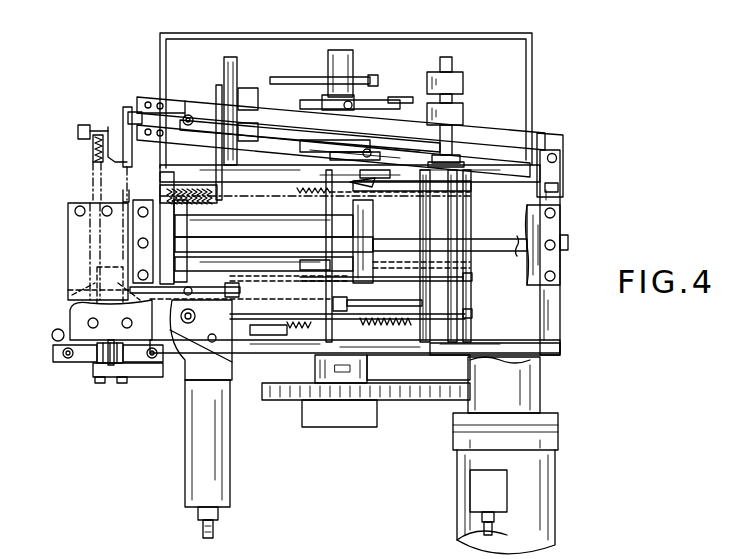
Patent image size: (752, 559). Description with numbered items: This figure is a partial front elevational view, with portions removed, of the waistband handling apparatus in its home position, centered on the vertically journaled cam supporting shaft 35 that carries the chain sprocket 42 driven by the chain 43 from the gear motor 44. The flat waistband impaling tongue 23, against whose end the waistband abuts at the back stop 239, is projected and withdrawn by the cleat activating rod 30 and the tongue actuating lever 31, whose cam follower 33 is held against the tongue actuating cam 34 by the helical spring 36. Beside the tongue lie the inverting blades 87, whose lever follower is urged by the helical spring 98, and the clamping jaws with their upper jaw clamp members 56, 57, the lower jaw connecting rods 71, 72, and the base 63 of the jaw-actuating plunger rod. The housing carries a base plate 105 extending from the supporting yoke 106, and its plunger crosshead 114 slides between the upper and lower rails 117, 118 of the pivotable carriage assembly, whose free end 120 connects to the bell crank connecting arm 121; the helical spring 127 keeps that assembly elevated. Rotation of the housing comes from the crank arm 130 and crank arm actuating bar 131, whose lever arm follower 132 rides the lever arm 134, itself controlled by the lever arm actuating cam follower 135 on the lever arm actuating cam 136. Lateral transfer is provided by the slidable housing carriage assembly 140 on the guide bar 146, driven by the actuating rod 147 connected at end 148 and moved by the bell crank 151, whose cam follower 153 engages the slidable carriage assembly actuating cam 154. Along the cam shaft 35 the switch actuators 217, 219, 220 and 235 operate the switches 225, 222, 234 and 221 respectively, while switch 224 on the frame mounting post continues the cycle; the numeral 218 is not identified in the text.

The cam supporting shaft 35 is at (343, 47).
The free end of carriage assembly 120 is at (133, 103).
The plunger crosshead 114 is at (165, 96).
The upper rails 117 is at (180, 103).
The lower rails 118 is at (207, 137).
The bell crank connecting arm 121 is at (123, 110).
The helical spring 127 is at (92, 149).
The actuating rod end 148 is at (125, 181).
The switch 221 is at (217, 147).
The switch 234 is at (245, 87).
The switch 222 is at (254, 88).
The switch actuator 217 is at (285, 77).
The bar 218 is at (304, 108).
The arcuate switch actuator 220 is at (393, 97).
The switch 225 is at (462, 78).
The switch 224 is at (462, 110).
The switch actuator 219 is at (350, 147).
The switch actuator 235 is at (383, 158).
The back stop 239 is at (72, 228).
The base 63 is at (110, 287).
The lower jaw connecting rod 72 is at (102, 313).
The lower jaw connecting rod 71 is at (52, 333).
The upper jaw clamp member 56 is at (62, 363).
The upper jaw clamp member 57 is at (162, 363).
The inverting blades 87 is at (98, 362).
The waistband impaling tongue 23 is at (112, 370).
The base plate 105 is at (148, 378).
The supporting yoke 106 is at (198, 356).
The cleat activating rod 30 is at (234, 354).
The slidable housing carriage assembly 140 is at (380, 230).
The actuating rod 147 is at (250, 190).
The guide bar 146 is at (503, 241).
The cam follower 153 is at (370, 184).
The slidable carriage assembly actuating cam 154 is at (464, 187).
The bell crank 151 is at (480, 205).
The lever arm follower 132 is at (250, 275).
The lever arm actuating cam 136 is at (313, 266).
The lever arm actuating cam follower 135 is at (373, 270).
The lever arm 134 is at (467, 278).
The crank arm actuating bar 131 is at (240, 291).
The crank arm 130 is at (236, 296).
The cam follower 33 is at (334, 302).
The tongue actuating cam 34 is at (356, 304).
The tongue actuating lever 31 is at (470, 316).
The helical spring 98 is at (300, 332).
The helical spring 36 is at (397, 330).
The chain sprocket 42 is at (412, 401).
The chain 43 is at (540, 388).
The gear motor 44 is at (547, 493).